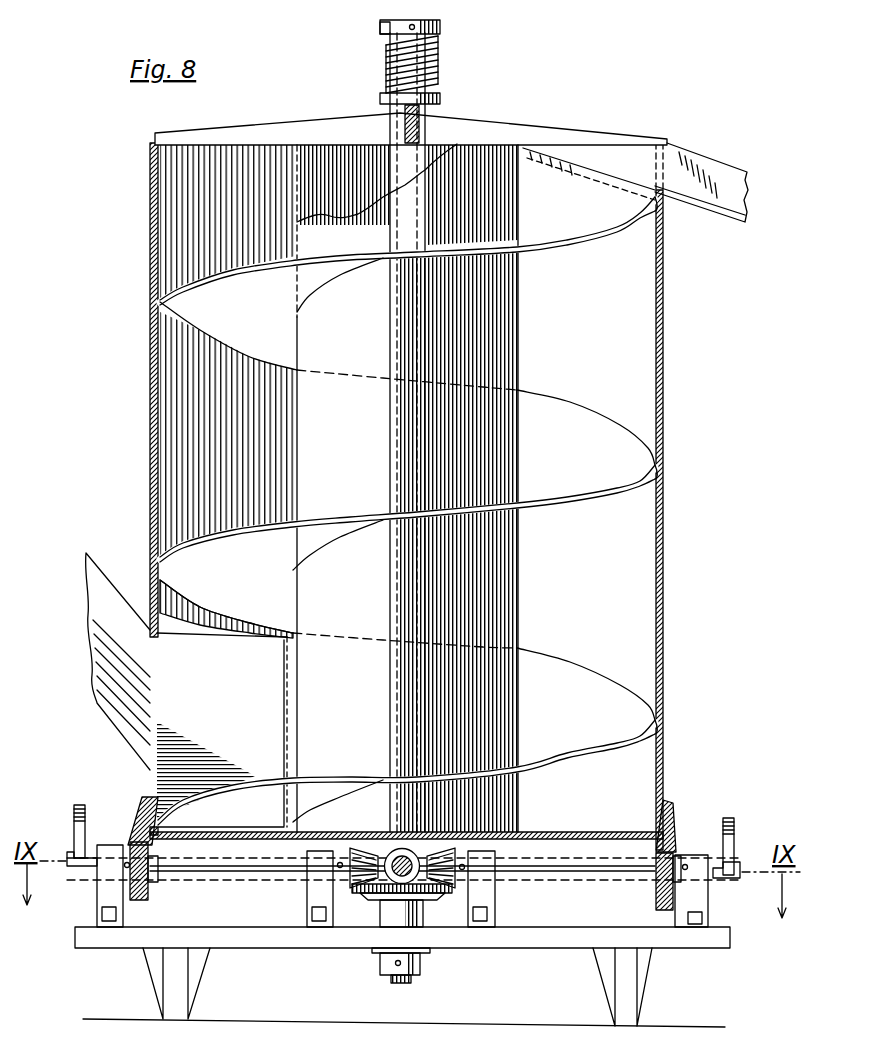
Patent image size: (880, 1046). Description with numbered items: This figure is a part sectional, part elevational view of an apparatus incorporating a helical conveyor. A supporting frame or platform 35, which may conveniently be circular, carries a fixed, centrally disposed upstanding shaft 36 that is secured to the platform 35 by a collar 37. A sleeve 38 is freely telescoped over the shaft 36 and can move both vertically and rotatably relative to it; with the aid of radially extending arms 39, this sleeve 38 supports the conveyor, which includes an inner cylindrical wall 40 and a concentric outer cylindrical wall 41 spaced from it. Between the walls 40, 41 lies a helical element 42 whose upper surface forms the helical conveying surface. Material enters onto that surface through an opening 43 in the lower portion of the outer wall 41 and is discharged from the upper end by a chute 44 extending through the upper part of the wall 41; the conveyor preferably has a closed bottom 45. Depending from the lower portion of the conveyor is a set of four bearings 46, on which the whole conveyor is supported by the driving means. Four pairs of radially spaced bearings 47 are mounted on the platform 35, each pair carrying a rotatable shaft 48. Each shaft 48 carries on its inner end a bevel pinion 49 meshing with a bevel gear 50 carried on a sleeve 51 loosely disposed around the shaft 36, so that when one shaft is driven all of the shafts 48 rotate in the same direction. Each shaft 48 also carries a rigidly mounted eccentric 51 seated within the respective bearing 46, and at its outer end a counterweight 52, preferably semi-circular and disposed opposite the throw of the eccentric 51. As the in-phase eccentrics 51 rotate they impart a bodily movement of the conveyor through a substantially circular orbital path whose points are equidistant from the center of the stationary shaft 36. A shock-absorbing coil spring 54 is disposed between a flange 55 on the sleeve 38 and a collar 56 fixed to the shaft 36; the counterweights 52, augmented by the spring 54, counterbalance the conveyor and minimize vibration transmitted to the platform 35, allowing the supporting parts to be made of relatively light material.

The supporting frame or platform 35 is at (276, 935).
The fixed upstanding shaft 36 is at (442, 27).
The collar 37 is at (420, 960).
The sleeve 38 is at (405, 160).
The radially extending arms 39 is at (380, 130).
The inner cylindrical wall 40 is at (487, 325).
The outer cylindrical wall 41 is at (660, 355).
The helical element 42 is at (588, 438).
The opening 43 is at (150, 688).
The chute 44 is at (700, 170).
The closed bottom 45 is at (555, 833).
The bearings 46 is at (140, 820).
The radially spaced bearings 47 is at (690, 893).
The rotatable shaft 48 is at (596, 868).
The bevel pinion 49 is at (398, 853).
The bevel gear 50 is at (380, 893).
The eccentric 51 is at (665, 865).
The counterweight 52 is at (733, 840).
The shock-absorbing coil spring 54 is at (440, 65).
The flange 55 is at (440, 98).
The collar 56 is at (390, 33).